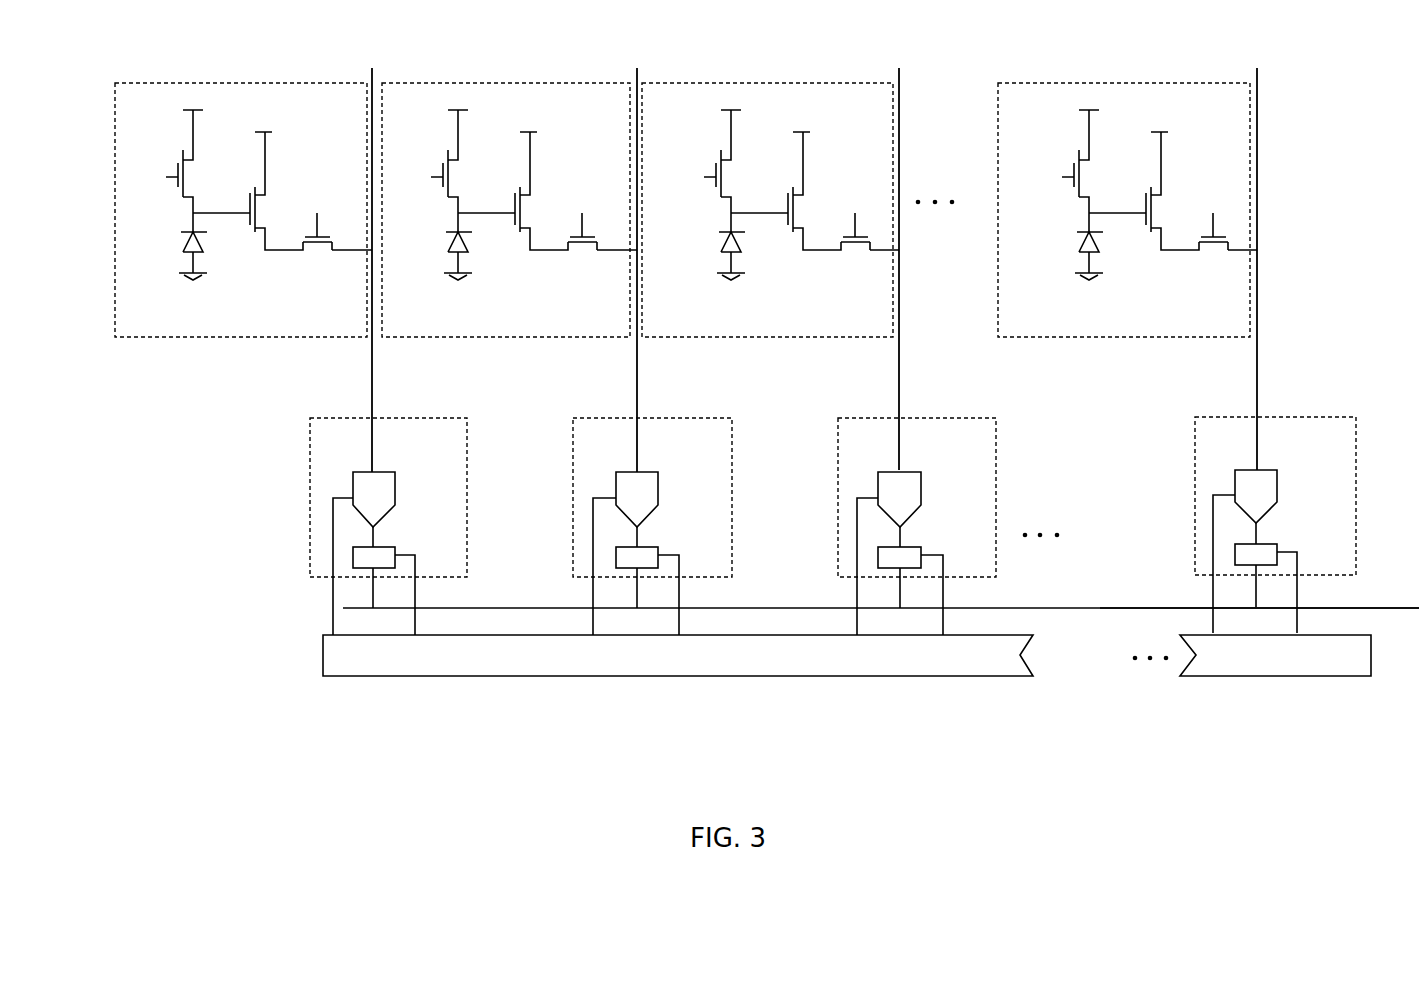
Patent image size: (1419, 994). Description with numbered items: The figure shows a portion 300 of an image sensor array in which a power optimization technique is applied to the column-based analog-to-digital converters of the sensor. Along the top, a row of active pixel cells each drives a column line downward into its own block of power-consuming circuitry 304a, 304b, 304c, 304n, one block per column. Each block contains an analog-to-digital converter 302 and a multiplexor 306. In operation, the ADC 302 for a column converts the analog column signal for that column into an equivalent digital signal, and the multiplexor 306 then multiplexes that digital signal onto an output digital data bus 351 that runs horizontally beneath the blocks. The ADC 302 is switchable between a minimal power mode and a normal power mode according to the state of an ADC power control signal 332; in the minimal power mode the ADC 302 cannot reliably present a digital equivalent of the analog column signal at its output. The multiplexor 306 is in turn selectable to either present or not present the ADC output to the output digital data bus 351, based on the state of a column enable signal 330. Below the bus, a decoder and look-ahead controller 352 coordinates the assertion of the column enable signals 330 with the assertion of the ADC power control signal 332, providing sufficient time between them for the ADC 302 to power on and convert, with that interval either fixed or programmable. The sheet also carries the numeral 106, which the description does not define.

The portion of an image sensor array 300 is at (235, 425).
The analog-to-digital converter 302 is at (388, 472).
The power-consuming circuitry 304a is at (388, 516).
The power-consuming circuitry 304b is at (652, 516).
The power-consuming circuitry 304c is at (917, 516).
The power-consuming circuitry 304n is at (1275, 514).
The multiplexor 306 is at (390, 547).
The column enable signal 330 is at (417, 597).
The ADC power control signal 332 is at (333, 610).
The output digital data bus 351 is at (1128, 608).
The decoder and look-ahead controller 352 is at (847, 655).
The imager readout circuit 106 is at (847, 694).